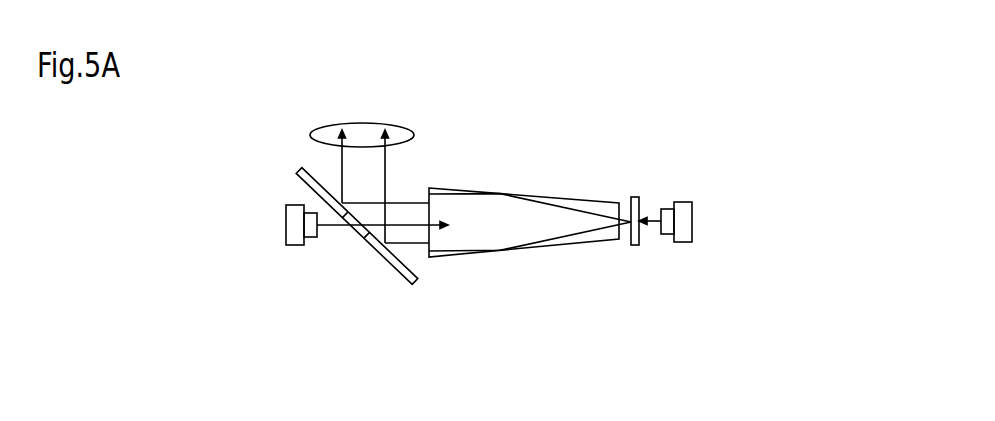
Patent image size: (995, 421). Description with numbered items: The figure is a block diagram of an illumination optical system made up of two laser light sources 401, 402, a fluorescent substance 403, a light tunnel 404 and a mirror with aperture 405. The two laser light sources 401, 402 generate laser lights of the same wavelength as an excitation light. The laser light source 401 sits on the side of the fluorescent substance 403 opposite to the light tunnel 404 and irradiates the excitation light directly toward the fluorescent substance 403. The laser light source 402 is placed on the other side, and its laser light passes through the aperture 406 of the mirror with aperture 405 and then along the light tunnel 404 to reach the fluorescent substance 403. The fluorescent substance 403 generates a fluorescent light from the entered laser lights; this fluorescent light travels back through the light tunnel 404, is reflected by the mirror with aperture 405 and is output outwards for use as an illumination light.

The laser light source 401 is at (682, 202).
The laser light source 402 is at (292, 205).
The fluorescent substance 403 is at (634, 246).
The light tunnel 404 is at (572, 199).
The mirror with aperture 405 is at (412, 284).
The aperture 406 is at (355, 236).